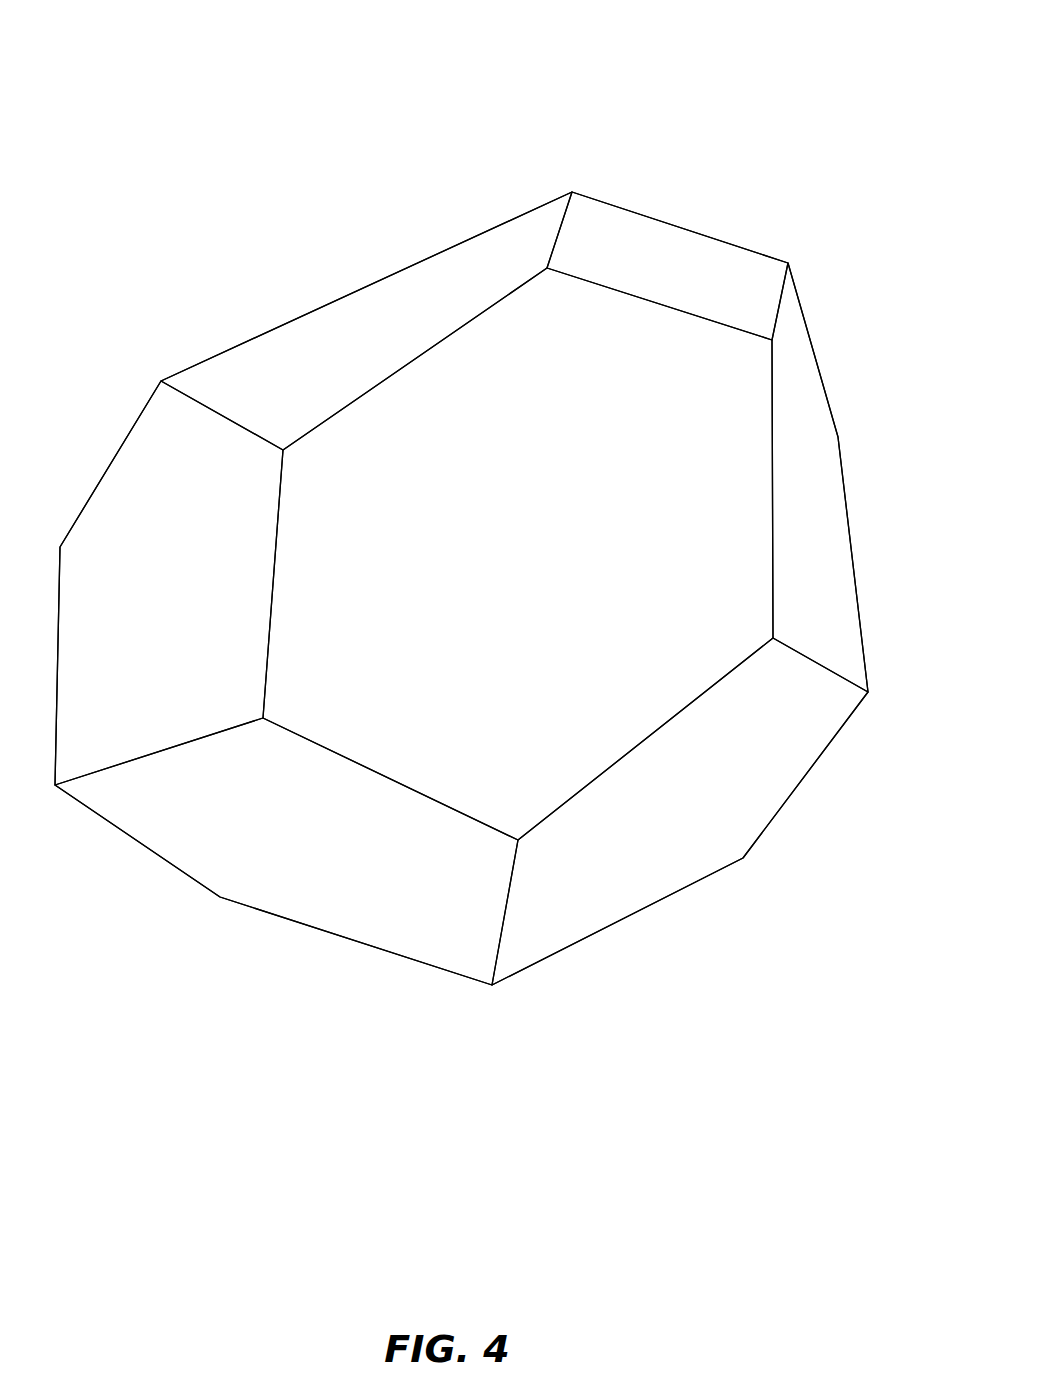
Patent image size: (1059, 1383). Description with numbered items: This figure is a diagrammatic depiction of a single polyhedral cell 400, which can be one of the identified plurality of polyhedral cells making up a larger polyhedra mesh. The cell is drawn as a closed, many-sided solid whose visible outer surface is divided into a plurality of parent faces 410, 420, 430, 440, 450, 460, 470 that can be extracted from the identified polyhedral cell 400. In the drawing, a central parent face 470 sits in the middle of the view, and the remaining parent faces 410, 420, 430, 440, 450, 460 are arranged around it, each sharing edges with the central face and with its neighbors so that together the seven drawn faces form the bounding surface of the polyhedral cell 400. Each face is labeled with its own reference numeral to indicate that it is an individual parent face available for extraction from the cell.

The polyhedral cell 400 is at (806, 76).
The parent face 410 is at (307, 874).
The parent face 420 is at (665, 818).
The parent face 430 is at (792, 567).
The parent face 440 is at (641, 286).
The parent face 450 is at (329, 333).
The parent face 460 is at (135, 603).
The parent face 470 is at (509, 548).